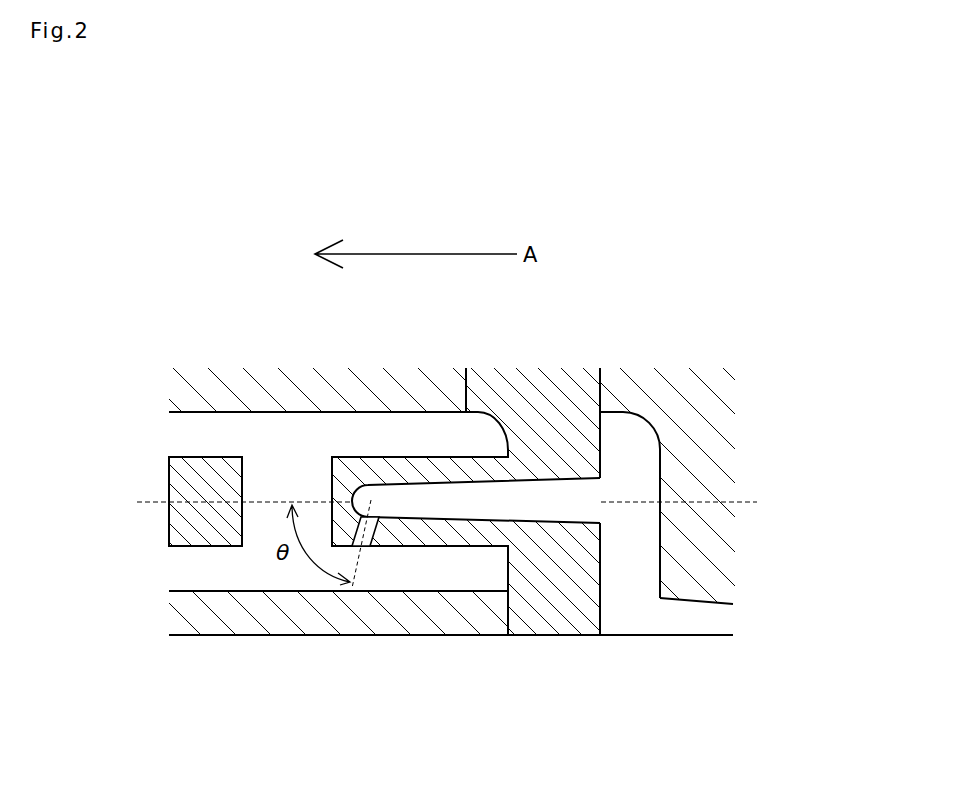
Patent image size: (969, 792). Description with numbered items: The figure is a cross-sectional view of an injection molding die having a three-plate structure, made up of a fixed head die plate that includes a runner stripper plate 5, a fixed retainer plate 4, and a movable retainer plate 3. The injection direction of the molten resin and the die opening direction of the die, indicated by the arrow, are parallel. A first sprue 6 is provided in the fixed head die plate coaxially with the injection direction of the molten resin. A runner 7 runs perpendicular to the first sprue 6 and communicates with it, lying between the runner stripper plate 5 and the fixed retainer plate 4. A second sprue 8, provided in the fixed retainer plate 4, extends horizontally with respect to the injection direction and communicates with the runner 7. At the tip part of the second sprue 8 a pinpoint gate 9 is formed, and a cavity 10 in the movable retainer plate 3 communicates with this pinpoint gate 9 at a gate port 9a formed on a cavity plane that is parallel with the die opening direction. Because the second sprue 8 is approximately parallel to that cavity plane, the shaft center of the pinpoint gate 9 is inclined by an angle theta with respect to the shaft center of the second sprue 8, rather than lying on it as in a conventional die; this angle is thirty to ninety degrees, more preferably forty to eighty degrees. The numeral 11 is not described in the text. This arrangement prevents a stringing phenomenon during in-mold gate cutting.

The movable retainer plate 3 is at (284, 385).
The fixed retainer plate 4 is at (510, 387).
The runner stripper plate 5 is at (655, 387).
The first sprue 6 is at (662, 617).
The runner 7 is at (640, 468).
The second sprue 8 is at (485, 512).
The pinpoint gate 9 is at (375, 547).
The gate port 9a is at (363, 547).
The cavity 10 is at (183, 440).
The base member 11 is at (180, 517).